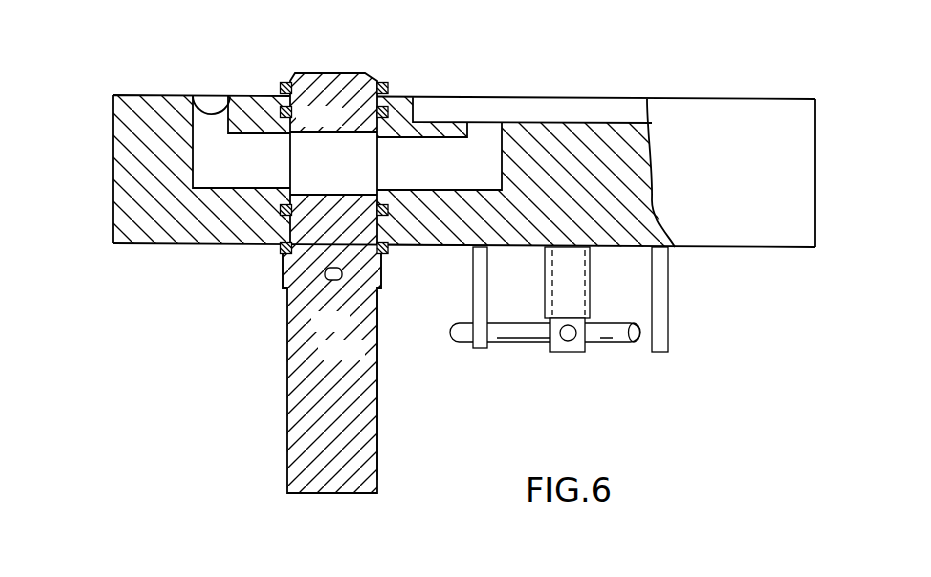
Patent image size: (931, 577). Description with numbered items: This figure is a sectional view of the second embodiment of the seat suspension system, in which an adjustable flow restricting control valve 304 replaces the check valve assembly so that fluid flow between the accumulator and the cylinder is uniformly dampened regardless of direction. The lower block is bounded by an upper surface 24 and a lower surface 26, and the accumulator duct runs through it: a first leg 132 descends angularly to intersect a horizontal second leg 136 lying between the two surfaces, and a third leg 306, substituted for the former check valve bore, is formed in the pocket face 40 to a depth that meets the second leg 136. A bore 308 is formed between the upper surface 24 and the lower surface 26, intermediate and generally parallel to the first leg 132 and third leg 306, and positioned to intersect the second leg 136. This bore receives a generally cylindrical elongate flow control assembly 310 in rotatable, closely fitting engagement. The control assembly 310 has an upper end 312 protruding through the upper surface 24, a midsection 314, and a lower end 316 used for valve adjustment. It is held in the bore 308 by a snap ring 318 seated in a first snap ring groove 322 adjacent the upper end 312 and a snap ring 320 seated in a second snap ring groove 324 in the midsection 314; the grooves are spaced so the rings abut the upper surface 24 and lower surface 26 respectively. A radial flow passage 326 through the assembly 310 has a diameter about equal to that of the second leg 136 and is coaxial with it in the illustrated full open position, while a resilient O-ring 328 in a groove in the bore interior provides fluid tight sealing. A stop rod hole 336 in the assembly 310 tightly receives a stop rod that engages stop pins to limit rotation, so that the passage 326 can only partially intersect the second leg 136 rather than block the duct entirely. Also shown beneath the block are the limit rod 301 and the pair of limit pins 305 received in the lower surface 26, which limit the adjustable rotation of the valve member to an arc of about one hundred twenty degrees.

The upper surface 24 is at (162, 96).
The lower surface 26 is at (138, 245).
The first leg 132 is at (200, 148).
The pocket face 40 is at (448, 117).
The third leg 306 is at (505, 128).
The second leg 136 is at (440, 177).
The radial flow passage 326 is at (405, 103).
The upper end 312 is at (327, 73).
The first snap ring groove 322 is at (368, 91).
The second snap ring groove 324 is at (370, 256).
The lower end 316 is at (378, 456).
The midsection 314 is at (386, 278).
The flow control assembly 310 is at (270, 268).
The flow restricting control valve 304 is at (394, 273).
The bore 308 is at (403, 250).
The stop rod hole 336 is at (333, 281).
The snap ring 318 is at (379, 84).
The O-ring 328 is at (387, 214).
The snap ring 320 is at (279, 248).
The limit rod 301 is at (608, 342).
The limit pins 305 is at (480, 349).